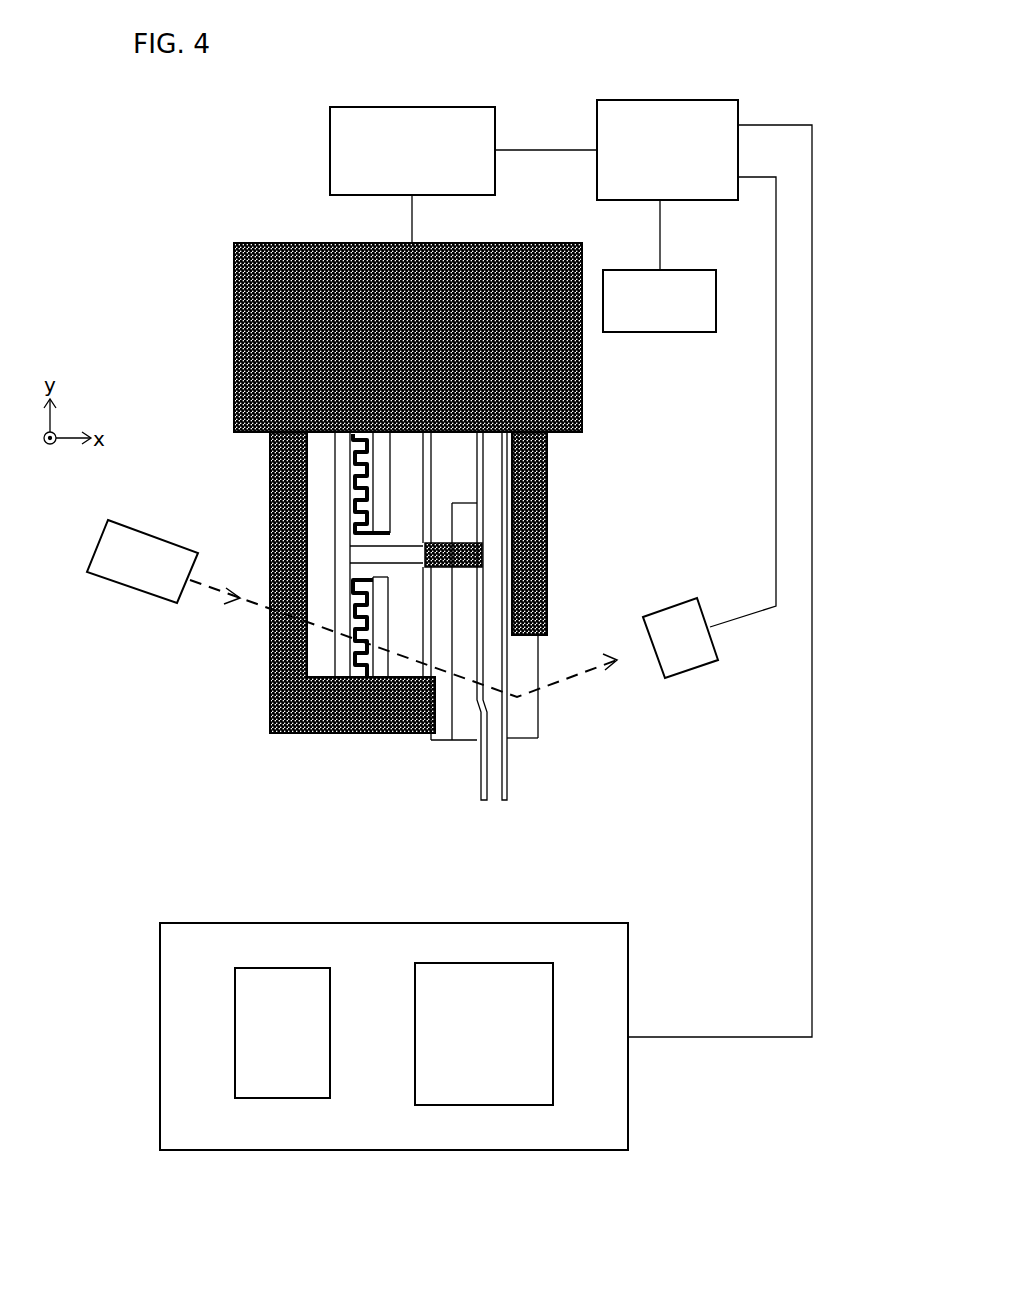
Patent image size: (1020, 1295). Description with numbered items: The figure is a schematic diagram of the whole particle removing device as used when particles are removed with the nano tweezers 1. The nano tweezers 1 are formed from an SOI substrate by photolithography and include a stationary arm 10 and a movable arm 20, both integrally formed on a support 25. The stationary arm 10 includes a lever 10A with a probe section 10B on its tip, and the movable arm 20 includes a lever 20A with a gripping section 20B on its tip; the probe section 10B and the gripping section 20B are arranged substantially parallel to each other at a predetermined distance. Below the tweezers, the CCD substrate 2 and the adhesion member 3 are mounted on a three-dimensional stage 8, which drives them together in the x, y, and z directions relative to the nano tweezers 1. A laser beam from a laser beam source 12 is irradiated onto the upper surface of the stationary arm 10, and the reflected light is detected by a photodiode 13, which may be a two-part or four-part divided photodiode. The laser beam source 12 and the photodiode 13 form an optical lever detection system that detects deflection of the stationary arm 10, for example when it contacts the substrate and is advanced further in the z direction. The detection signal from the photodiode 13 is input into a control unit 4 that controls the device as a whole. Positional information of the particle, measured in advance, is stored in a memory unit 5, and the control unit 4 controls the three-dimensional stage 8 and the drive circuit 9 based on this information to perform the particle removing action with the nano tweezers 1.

The nano tweezers 1 is at (235, 268).
The support 25 is at (252, 325).
The movable arm 20 is at (352, 748).
The lever 20A is at (462, 722).
The gripping section 20B is at (473, 765).
The stationary arm 10 is at (616, 708).
The lever 10A is at (523, 718).
The probe section 10B is at (507, 767).
The laser beam source 12 is at (140, 595).
The photodiode 13 is at (668, 607).
The drive circuit 9 is at (497, 128).
The control unit 4 is at (702, 202).
The memory unit 5 is at (660, 332).
The three-dimensional stage 8 is at (630, 962).
The CCD substrate 2 is at (487, 963).
The adhesion member 3 is at (283, 967).